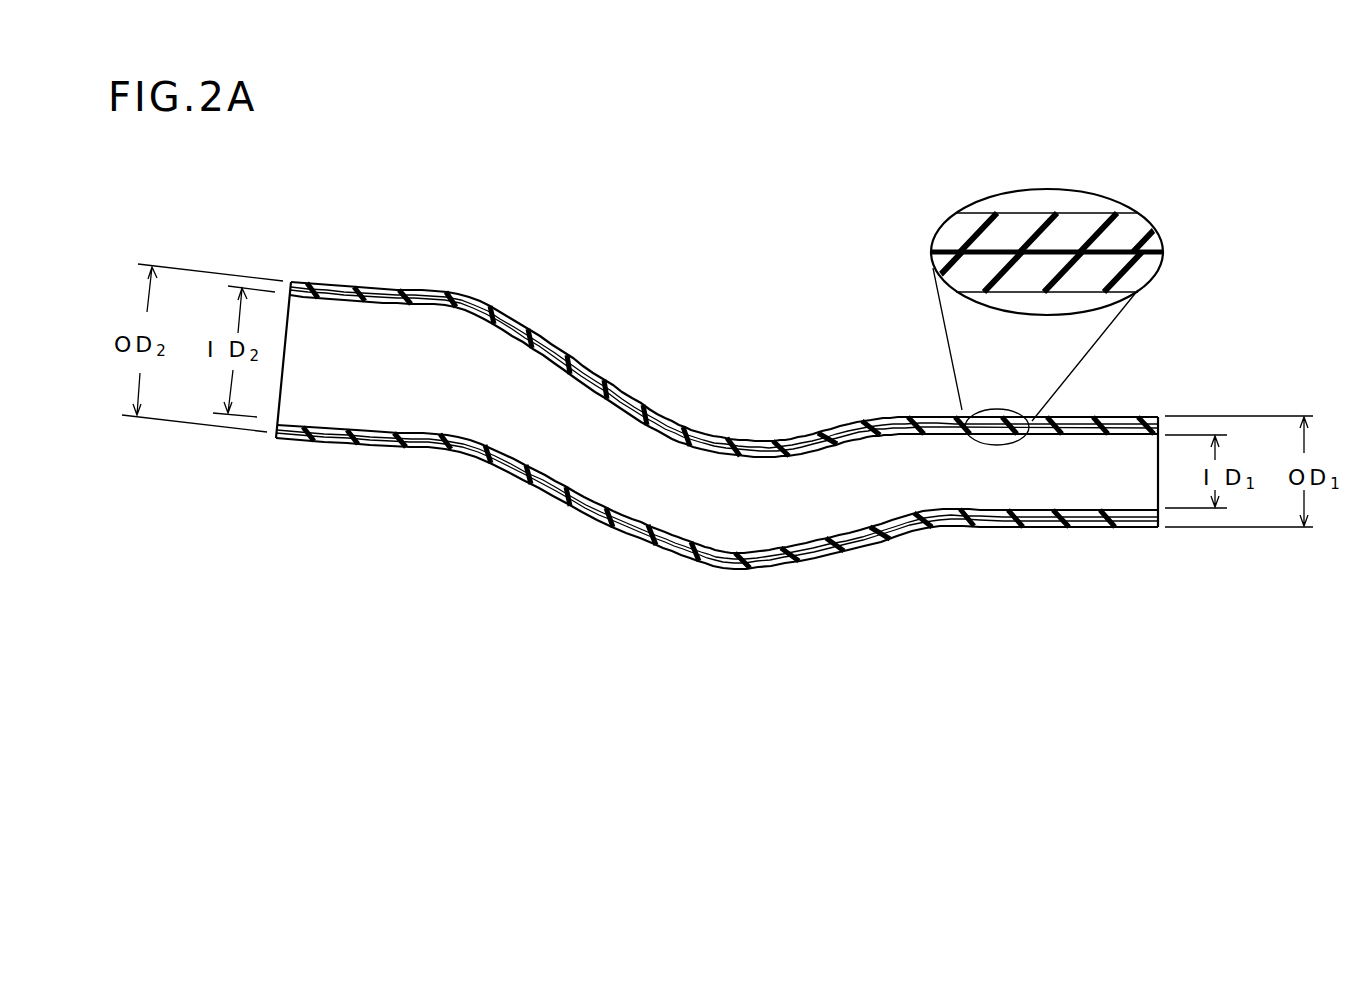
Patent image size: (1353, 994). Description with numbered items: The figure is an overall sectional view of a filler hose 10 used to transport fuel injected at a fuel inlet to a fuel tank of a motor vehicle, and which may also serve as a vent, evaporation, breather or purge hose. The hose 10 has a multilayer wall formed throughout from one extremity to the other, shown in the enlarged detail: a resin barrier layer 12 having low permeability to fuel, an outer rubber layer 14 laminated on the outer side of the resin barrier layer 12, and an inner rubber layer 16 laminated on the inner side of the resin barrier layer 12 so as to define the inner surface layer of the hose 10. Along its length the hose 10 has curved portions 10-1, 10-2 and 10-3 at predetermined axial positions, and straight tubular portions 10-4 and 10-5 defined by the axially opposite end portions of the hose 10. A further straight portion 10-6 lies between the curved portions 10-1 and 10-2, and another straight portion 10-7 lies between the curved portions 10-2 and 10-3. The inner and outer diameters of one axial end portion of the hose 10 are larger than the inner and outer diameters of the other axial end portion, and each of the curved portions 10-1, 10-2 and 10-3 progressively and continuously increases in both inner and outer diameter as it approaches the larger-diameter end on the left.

The filler hose 10 is at (730, 345).
The curved portion 10-1 is at (890, 405).
The curved portion 10-2 is at (755, 580).
The curved portion 10-3 is at (470, 290).
The straight portion 10-4 is at (1080, 540).
The straight portion 10-5 is at (295, 448).
The straight portion 10-6 is at (848, 570).
The straight portion 10-7 is at (575, 527).
The resin barrier layer 12 is at (1007, 250).
The outer rubber layer 14 is at (1115, 233).
The inner rubber layer 16 is at (1063, 282).